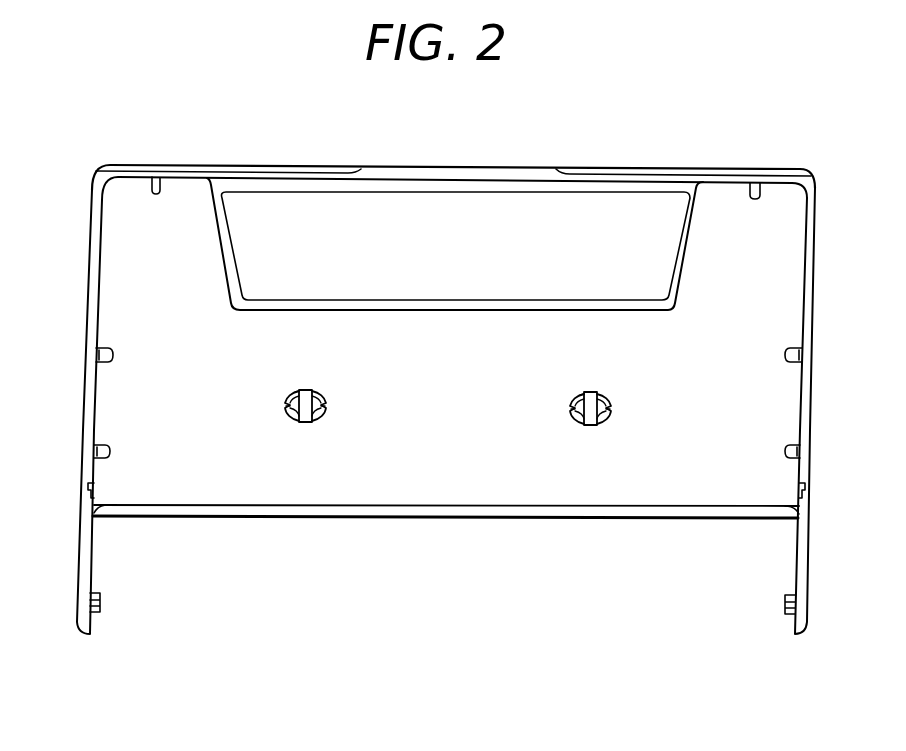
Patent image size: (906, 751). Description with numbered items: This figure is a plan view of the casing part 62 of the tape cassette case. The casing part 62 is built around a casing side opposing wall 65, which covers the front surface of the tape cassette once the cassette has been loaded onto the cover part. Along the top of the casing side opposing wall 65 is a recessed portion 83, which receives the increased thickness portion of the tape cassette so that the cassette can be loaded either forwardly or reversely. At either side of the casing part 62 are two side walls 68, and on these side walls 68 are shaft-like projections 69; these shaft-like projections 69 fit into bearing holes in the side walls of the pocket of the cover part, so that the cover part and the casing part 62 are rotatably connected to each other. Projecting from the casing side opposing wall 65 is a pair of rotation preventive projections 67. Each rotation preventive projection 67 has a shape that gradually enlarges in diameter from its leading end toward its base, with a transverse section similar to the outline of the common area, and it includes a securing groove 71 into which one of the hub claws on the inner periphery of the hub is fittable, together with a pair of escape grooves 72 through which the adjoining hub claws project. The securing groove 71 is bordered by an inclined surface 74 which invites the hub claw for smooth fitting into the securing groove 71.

The casing part 62 is at (508, 165).
The casing side opposing wall 65 is at (798, 268).
The rotation preventive projections 67 is at (323, 429).
The side walls 68 is at (85, 545).
The shaft-like projections 69 is at (100, 612).
The securing groove 71 is at (306, 391).
The escape grooves 72 is at (286, 406).
The inclined surface 74 is at (295, 392).
The recessed portion 83 is at (637, 202).